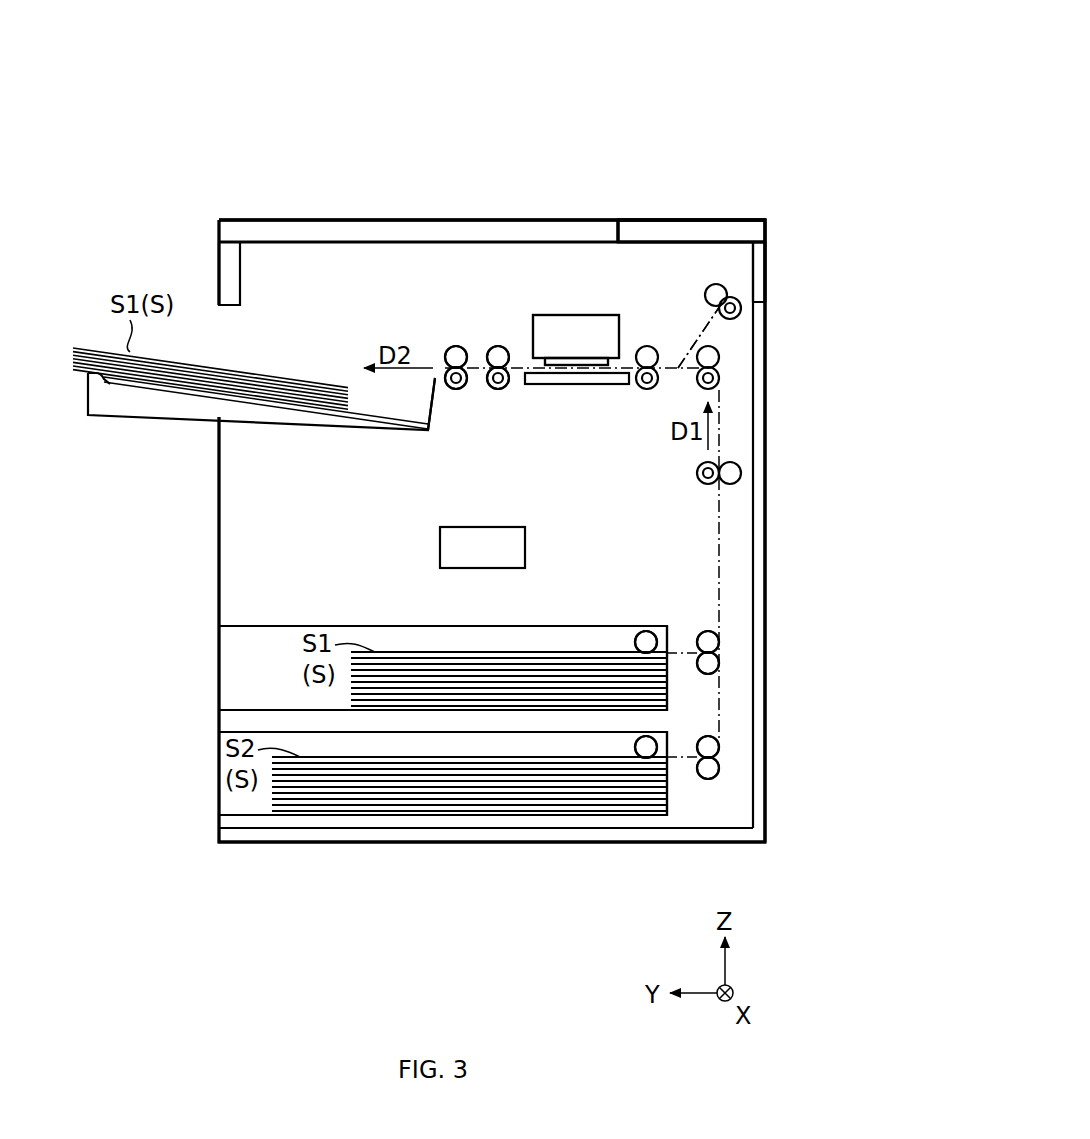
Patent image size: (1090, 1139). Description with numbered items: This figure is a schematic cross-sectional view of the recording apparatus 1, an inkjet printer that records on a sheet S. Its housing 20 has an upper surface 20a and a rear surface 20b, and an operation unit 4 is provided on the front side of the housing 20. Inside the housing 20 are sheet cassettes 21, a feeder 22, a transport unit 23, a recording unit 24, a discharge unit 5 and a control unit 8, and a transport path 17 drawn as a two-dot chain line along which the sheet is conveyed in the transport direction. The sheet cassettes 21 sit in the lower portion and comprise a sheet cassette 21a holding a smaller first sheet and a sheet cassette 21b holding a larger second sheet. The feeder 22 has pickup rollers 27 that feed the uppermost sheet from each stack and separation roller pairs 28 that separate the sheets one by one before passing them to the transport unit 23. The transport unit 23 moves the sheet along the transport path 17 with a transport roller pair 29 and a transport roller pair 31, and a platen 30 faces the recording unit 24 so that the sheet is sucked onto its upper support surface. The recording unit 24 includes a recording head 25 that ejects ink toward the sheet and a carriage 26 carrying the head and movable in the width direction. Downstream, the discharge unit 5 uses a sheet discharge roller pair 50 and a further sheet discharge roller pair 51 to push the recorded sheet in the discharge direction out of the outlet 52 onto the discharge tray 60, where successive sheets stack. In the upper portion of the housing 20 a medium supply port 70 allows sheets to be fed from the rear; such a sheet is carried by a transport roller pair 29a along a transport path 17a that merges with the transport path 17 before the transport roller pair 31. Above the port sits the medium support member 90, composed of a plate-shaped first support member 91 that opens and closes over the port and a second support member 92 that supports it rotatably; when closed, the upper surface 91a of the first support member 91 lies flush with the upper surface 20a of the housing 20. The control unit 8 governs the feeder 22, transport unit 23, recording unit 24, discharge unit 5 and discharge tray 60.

The recording apparatus 1 is at (720, 69).
The medium support member 90 is at (754, 160).
The first support member 91 is at (718, 220).
The upper surface of the first support member 91a is at (643, 220).
The second support member 92 is at (766, 255).
The housing 20 is at (766, 452).
The upper surface of the housing 20a is at (372, 220).
The rear surface of the housing 20b is at (766, 410).
The operation unit 4 is at (218, 262).
The discharge tray 60 is at (166, 432).
The outlet 52 is at (430, 374).
The sheet discharge roller pair 51 is at (456, 392).
The sheet discharge roller pair 50 is at (498, 392).
The discharge unit 5 is at (482, 466).
The recording unit 24 is at (528, 320).
The recording head 25 is at (556, 358).
The carriage 26 is at (595, 322).
The platen 30 is at (550, 386).
The transport roller pair 31 is at (640, 384).
The transport unit 23 is at (730, 352).
The transport roller pair 29 is at (720, 380).
The medium supply port 70 is at (732, 280).
The transport roller pair 29a is at (740, 305).
The transport path 17 is at (718, 535).
The transport path 17a is at (698, 342).
The control unit 8 is at (518, 545).
The pickup rollers 27 is at (640, 631).
The separation roller pairs 28 is at (718, 634).
The feeder 22 is at (729, 698).
The sheet cassettes 21 is at (118, 660).
The sheet cassette 21a is at (219, 663).
The sheet cassette 21b is at (219, 770).